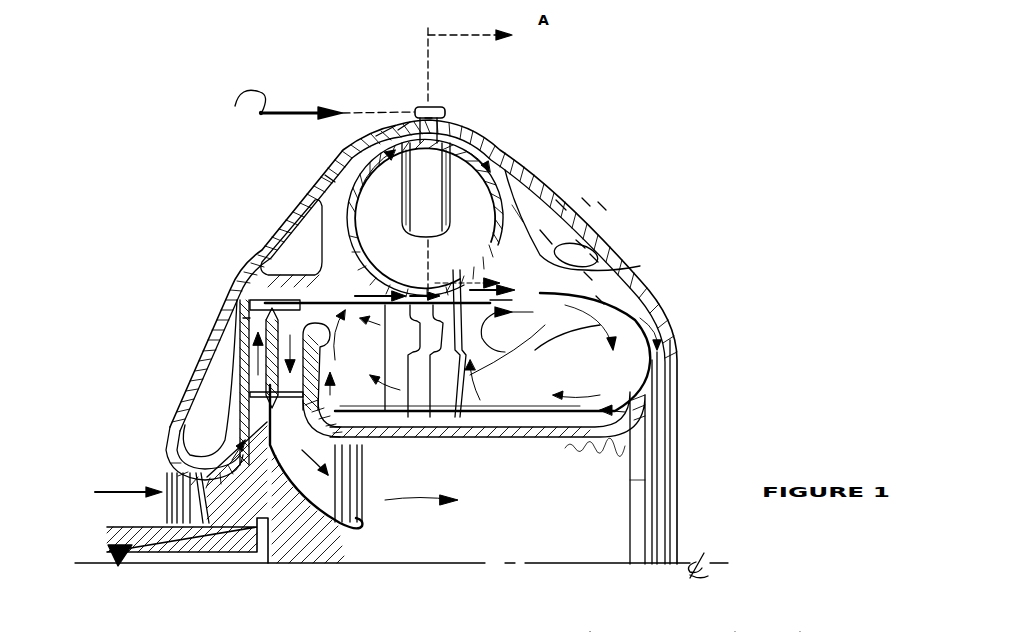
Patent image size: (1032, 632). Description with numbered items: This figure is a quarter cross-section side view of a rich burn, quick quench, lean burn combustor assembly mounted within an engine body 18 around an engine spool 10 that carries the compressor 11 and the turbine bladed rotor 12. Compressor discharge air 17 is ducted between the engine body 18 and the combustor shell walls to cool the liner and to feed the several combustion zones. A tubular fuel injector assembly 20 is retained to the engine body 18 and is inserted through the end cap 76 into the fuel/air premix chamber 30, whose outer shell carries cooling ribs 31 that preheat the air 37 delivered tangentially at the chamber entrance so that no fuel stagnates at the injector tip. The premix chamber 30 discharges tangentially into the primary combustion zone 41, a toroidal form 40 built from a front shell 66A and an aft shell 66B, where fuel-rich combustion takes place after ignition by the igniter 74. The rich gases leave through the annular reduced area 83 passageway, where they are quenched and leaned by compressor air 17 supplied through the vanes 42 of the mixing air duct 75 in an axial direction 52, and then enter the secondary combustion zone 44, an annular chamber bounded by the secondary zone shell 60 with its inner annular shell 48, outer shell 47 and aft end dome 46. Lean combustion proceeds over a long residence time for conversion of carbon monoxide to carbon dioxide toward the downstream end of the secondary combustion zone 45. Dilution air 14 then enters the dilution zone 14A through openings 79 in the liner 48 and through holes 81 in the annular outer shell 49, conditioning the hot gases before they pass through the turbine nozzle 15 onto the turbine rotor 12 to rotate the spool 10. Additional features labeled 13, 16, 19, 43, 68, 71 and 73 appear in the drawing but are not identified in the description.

The spool 10 is at (118, 562).
The compressor 11 is at (168, 552).
The turbine bladed rotor 12 is at (335, 525).
The inlet duct 13 is at (157, 505).
The dilution air 14 is at (250, 298).
The dilution zone 14A is at (250, 318).
The turbine nozzle 15 is at (250, 375).
The support plate 16 is at (250, 328).
The compressor air 17 is at (262, 264).
The engine body 18 is at (332, 178).
The cap seat 19 is at (402, 125).
The fuel injector assembly 20 is at (447, 108).
The F/A premix chamber 30 is at (436, 190).
The cooling ribs 31 is at (805, 624).
The tangential air 37 is at (724, 624).
The toroidal shell assembly 40 is at (484, 262).
The primary combustion zone 41 is at (498, 240).
The channels/vanes 42 is at (545, 218).
The wall 43 is at (587, 270).
The secondary combustion zone 44 is at (577, 282).
The secondary combustion zone 45 is at (607, 295).
The aft end dome 46 is at (656, 370).
The outer shell 47 is at (595, 280).
The inner annular shell 48 is at (473, 393).
The annular outer shell 49 is at (385, 440).
The axial secondary air flow 52 is at (458, 440).
The secondary combustion zone shell 60 is at (470, 400).
The front shell 66A is at (390, 150).
The aft shell 66B is at (462, 148).
The wall 68 is at (538, 215).
The column 71 is at (600, 478).
The inlet arrow 73 is at (313, 105).
The igniter 74 is at (565, 232).
The secondary mixing air duct 75 is at (433, 437).
The end cap 76 is at (582, 624).
The liner openings 79 is at (240, 480).
The holes 81 is at (320, 250).
The annular reduced area passageway 83 is at (577, 257).